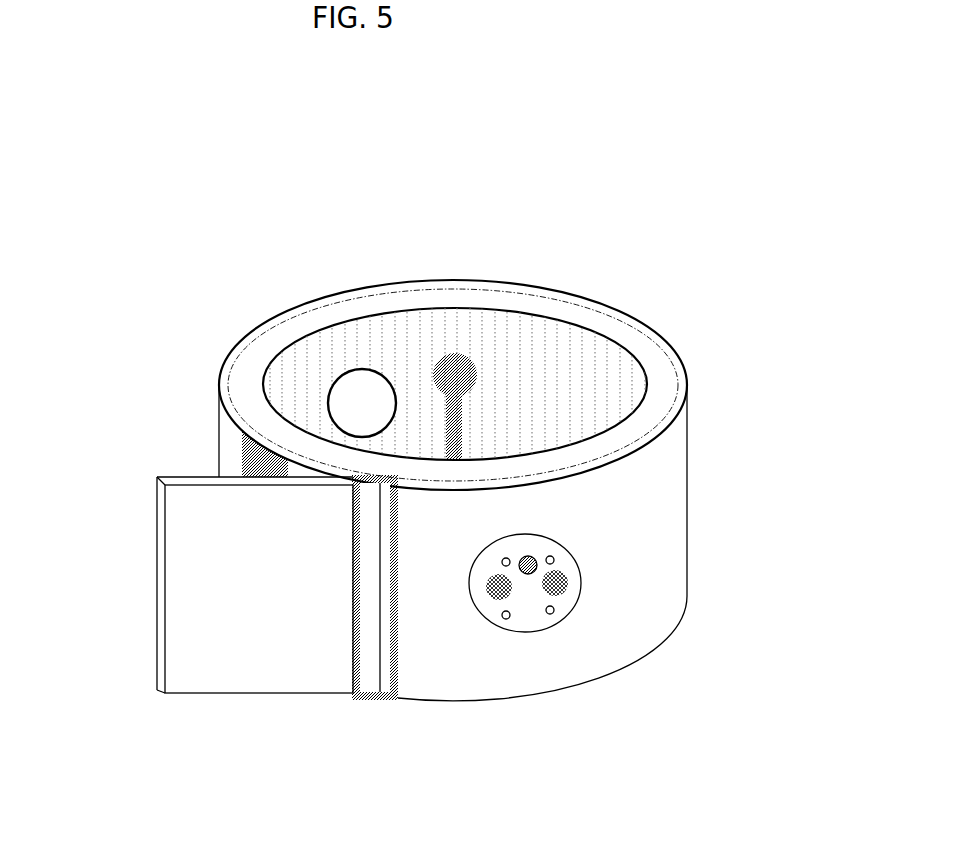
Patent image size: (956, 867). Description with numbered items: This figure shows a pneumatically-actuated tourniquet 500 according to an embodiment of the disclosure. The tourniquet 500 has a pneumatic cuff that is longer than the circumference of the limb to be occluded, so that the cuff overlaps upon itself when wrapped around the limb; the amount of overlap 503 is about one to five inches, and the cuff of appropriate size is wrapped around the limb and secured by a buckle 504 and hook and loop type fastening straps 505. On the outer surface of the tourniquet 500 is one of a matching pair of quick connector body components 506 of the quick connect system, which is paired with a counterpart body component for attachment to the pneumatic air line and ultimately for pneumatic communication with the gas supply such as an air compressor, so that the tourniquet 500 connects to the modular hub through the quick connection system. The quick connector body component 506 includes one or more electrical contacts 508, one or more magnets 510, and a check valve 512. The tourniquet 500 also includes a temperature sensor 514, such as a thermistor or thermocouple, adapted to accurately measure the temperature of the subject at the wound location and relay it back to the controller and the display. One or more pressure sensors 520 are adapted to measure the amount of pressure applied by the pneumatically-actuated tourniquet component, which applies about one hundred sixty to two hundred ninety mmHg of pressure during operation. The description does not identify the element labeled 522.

The tourniquet 500 is at (258, 289).
The overlap 503 is at (220, 655).
The buckle 504 is at (357, 667).
The hook and loop type fastening straps 505 is at (262, 455).
The quick connector body component 506 is at (478, 590).
The electrical contacts 508 is at (550, 614).
The magnets 510 is at (500, 588).
The check valve 512 is at (533, 565).
The temperature sensor 514 is at (457, 385).
The pressure sensor 520 is at (385, 393).
The inner surface 522 is at (532, 308).